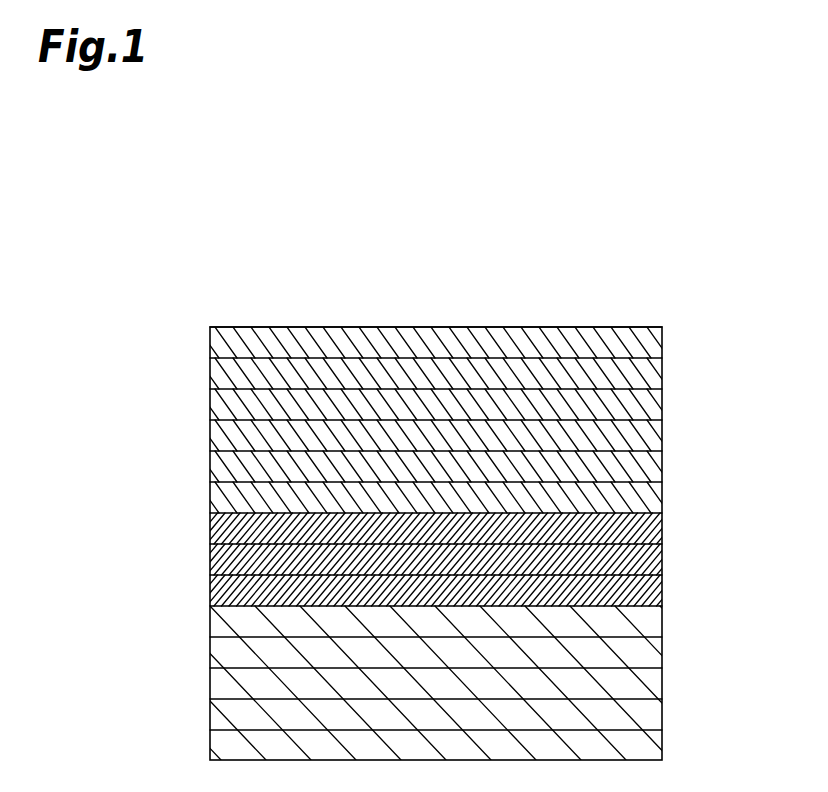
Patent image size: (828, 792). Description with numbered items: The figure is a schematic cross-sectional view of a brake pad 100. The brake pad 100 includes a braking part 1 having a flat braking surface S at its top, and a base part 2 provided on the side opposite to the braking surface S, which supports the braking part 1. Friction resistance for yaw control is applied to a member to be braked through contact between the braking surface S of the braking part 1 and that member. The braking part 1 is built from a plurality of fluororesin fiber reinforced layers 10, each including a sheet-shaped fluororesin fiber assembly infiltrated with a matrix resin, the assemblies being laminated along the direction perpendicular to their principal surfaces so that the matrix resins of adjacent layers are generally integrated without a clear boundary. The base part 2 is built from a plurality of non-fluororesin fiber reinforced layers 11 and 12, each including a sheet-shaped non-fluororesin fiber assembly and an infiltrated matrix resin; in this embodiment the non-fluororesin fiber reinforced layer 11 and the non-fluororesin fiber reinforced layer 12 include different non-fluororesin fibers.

The brake pad 100 is at (440, 474).
The braking part 1 is at (424, 420).
The base part 2 is at (440, 636).
The fluororesin fiber reinforced layer 10 is at (222, 375).
The non-fluororesin fiber reinforced layer 11 is at (222, 559).
The non-fluororesin fiber reinforced layer 12 is at (222, 684).
The braking surface S is at (390, 327).